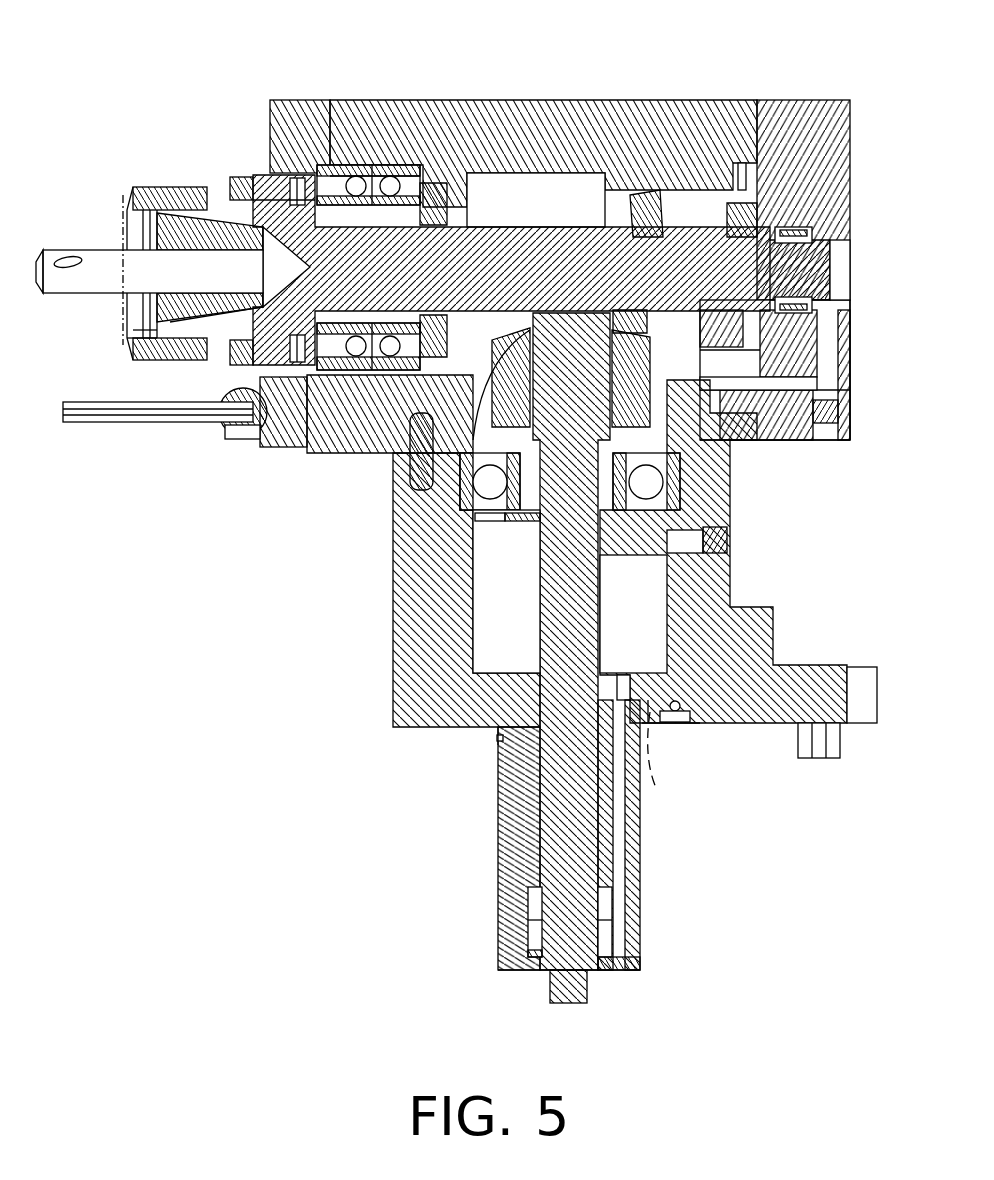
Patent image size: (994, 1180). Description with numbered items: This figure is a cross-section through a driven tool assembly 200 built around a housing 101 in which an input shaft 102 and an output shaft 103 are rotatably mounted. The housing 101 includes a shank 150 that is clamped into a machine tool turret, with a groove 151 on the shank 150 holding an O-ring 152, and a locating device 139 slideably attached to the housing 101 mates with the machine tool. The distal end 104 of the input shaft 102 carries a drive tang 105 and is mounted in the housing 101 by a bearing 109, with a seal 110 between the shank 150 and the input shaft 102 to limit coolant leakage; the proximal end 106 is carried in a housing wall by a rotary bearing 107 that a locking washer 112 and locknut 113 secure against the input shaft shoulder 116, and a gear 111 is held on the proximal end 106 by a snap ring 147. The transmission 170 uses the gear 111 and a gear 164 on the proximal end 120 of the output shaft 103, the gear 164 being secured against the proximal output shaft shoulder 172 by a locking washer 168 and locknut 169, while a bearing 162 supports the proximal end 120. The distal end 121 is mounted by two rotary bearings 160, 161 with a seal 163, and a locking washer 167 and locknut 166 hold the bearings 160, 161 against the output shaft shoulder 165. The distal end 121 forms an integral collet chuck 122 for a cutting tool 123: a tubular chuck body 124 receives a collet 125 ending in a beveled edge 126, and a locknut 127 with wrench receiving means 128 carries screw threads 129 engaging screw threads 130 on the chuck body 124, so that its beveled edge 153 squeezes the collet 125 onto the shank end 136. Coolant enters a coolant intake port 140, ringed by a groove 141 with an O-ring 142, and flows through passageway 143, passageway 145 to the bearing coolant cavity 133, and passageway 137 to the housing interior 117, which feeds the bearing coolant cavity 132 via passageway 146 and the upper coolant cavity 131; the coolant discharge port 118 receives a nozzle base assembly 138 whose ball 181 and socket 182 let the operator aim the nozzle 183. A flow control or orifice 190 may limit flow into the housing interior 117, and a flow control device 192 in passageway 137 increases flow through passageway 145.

The housing 101 is at (540, 100).
The input shaft 102 is at (500, 838).
The output shaft 103 is at (582, 225).
The distal end of the input shaft 104 is at (592, 930).
The drive tang 105 is at (590, 992).
The proximal end of the input shaft 106 is at (587, 470).
The rotary bearing 107 is at (665, 485).
The bearing 109 is at (530, 915).
The seal 110 is at (528, 952).
The gear 111 is at (470, 465).
The locking washer 112 is at (495, 528).
The locknut 113 is at (517, 522).
The input shaft shoulder 116 is at (472, 512).
The housing interior 117 is at (647, 607).
The coolant discharge port 118 is at (315, 450).
The proximal end of the output shaft 120 is at (754, 283).
The distal end of the output shaft 121 is at (390, 283).
The collet chuck 122 is at (200, 162).
The cutting tool 123 is at (110, 250).
The chuck body 124 is at (210, 325).
The collet 125 is at (125, 232).
The beveled edge 126 is at (140, 215).
The locknut 127 is at (130, 342).
The wrench receiving means 128 is at (155, 190).
The screw threads 129 is at (198, 356).
The screw threads 130 is at (232, 352).
The upper coolant cavity 131 is at (757, 445).
The bearing coolant cavity 132 is at (833, 272).
The bearing coolant cavity 133 is at (632, 950).
The shank end 136 is at (172, 352).
The passageway 137 is at (640, 718).
The nozzle base assembly 138 is at (253, 450).
The locating device 139 is at (785, 740).
The coolant intake port 140 is at (706, 738).
The groove 141 is at (690, 735).
The O-ring 142 is at (660, 735).
The passageway 143 is at (735, 665).
The passageway 145 is at (630, 875).
The passageway 146 is at (828, 340).
The snap ring 147 is at (412, 468).
The shank 150 is at (497, 850).
The groove 151 is at (497, 748).
The O-ring 152 is at (496, 738).
The beveled edge 153 is at (135, 322).
The rotary bearing 160 is at (366, 165).
The rotary bearing 161 is at (402, 165).
The bearing 162 is at (800, 236).
The seal 163 is at (285, 185).
The gear 164 is at (740, 175).
The output shaft shoulder 165 is at (348, 165).
The locknut 166 is at (445, 208).
The locking washer 167 is at (437, 165).
The locking washer 168 is at (775, 235).
The locknut 169 is at (778, 245).
The transmission 170 is at (692, 354).
The proximal output shaft shoulder 172 is at (650, 205).
The ball 181 is at (225, 414).
The socket 182 is at (232, 432).
The nozzle 183 is at (65, 424).
The flow control or orifice 190 is at (658, 820).
The flow control device 192 is at (622, 678).
The driven tool assembly 200 is at (760, 65).